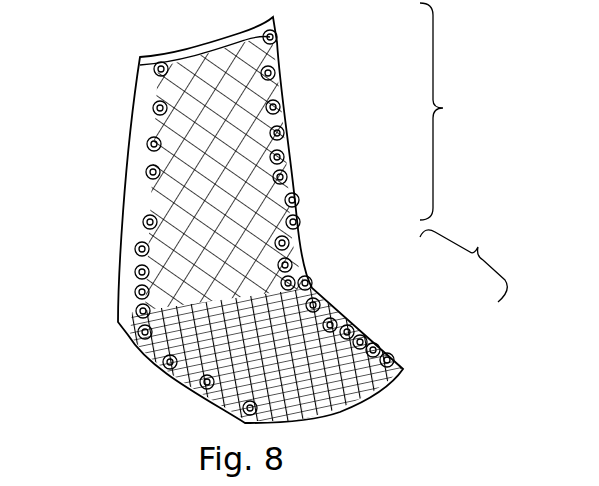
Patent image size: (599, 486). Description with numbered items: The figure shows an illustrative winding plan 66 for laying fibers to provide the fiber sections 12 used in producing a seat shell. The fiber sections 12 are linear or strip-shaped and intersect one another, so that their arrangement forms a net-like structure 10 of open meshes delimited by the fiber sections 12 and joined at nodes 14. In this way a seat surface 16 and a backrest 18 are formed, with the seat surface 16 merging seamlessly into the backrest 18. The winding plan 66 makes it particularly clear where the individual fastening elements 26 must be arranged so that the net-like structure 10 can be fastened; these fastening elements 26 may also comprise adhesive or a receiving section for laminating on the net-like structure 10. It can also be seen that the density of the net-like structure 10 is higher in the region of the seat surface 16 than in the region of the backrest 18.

The net-like structure 10 is at (244, 84).
The fiber sections 12 is at (190, 328).
The nodes 14 is at (141, 58).
The seat surface 16 is at (463, 265).
The backrest 18 is at (450, 111).
The fastening elements 26 is at (152, 169).
The winding plan 66 is at (330, 138).